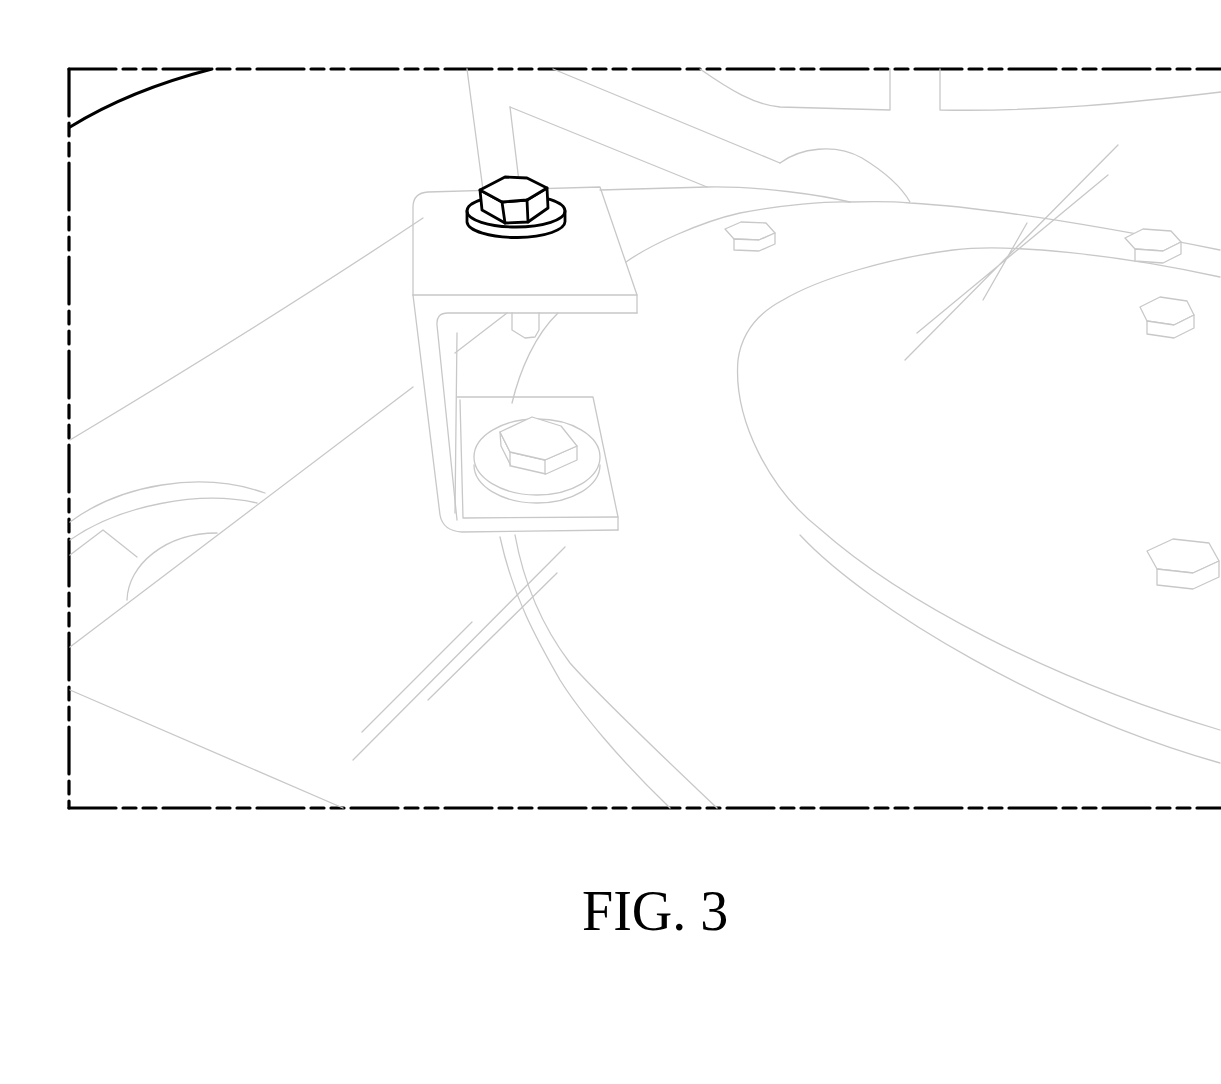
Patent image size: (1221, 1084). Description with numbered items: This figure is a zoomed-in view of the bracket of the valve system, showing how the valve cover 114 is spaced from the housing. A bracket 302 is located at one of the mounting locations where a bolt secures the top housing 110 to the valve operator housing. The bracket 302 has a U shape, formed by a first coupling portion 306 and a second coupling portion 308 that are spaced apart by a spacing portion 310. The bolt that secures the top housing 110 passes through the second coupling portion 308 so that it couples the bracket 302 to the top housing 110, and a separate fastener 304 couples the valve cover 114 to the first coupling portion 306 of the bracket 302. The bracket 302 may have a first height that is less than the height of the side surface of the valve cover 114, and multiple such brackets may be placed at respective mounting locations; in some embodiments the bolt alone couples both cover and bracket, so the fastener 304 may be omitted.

The top housing 110 is at (947, 562).
The valve cover 114 is at (236, 206).
The bracket 302 is at (437, 418).
The fastener 304 is at (500, 185).
The first coupling portion 306 is at (582, 210).
The second coupling portion 308 is at (603, 523).
The spacing portion 310 is at (447, 368).